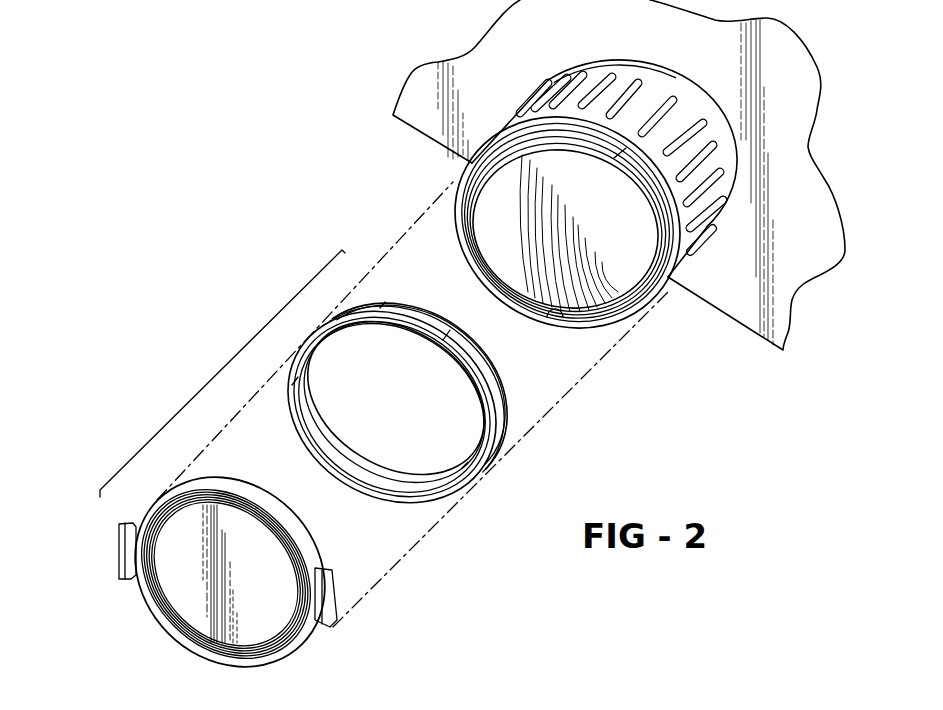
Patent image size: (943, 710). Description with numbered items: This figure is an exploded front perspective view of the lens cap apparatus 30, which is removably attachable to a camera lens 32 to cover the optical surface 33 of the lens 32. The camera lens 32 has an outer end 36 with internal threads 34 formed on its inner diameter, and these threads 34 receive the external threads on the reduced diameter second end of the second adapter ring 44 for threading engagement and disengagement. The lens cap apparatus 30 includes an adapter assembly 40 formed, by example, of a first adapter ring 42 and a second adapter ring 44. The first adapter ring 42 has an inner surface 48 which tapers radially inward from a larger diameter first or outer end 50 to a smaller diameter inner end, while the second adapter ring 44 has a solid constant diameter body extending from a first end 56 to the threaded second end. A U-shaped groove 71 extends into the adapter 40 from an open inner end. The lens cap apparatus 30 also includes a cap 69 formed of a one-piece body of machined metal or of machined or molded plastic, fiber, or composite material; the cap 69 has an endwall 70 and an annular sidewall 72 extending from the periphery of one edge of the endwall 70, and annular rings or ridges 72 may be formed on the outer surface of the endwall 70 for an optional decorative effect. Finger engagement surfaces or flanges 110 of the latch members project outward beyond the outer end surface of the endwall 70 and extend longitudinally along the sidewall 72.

The lens cap apparatus 30 is at (222, 366).
The camera lens 32 is at (577, 186).
The optical surface 33 is at (490, 218).
The internal threads 34 is at (547, 309).
The outer end 36 is at (667, 263).
The adapter assembly 40 is at (423, 424).
The first adapter ring 42 is at (342, 488).
The second adapter ring 44 is at (477, 370).
The inner surface 48 is at (330, 464).
The first or outer end 50 is at (495, 466).
The first end 56 is at (490, 424).
The cap 69 is at (208, 606).
The endwall 70 is at (210, 568).
The U-shaped groove 71 is at (311, 424).
The annular sidewall 72 is at (208, 478).
The flange 110 is at (122, 555).